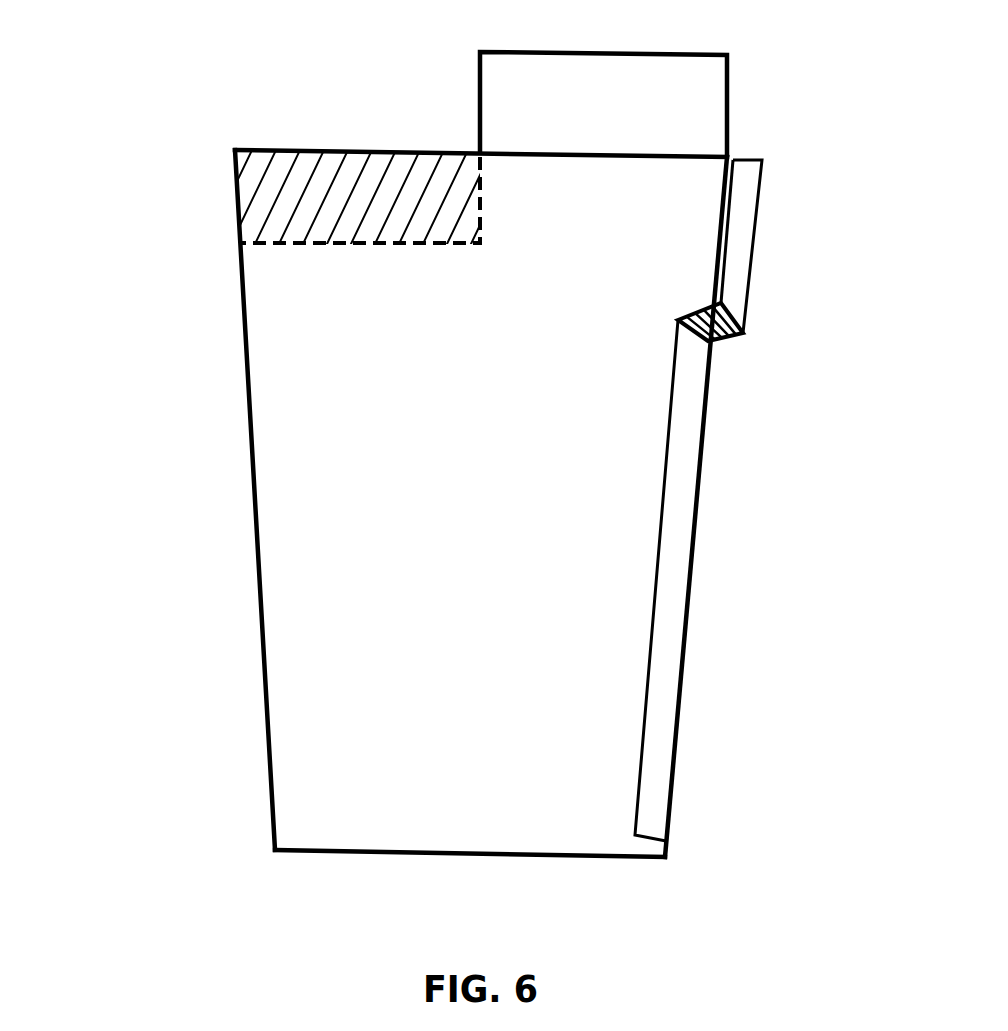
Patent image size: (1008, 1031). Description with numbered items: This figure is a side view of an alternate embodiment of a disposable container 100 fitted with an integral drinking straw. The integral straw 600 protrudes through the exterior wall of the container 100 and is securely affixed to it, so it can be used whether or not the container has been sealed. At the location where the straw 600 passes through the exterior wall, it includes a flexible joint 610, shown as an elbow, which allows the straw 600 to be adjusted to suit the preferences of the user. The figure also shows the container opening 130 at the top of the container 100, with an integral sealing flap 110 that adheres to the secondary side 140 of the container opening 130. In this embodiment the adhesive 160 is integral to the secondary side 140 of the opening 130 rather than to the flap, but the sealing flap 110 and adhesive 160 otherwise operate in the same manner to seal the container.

The disposable container 100 is at (263, 622).
The integral sealing flap 110 is at (652, 52).
The container opening 130 is at (390, 128).
The secondary side of the container opening 140 is at (235, 181).
The adhesive 160 is at (300, 207).
The integral straw 600 is at (762, 158).
The flexible joint 610 is at (747, 330).